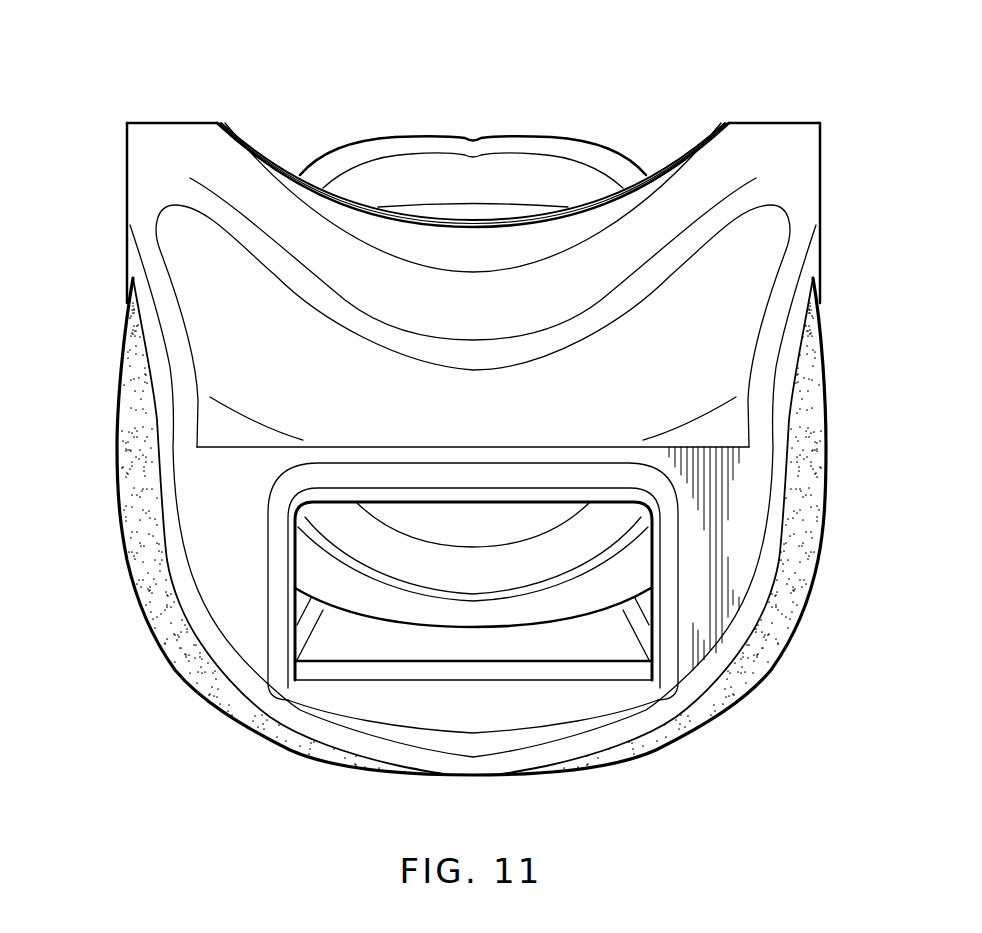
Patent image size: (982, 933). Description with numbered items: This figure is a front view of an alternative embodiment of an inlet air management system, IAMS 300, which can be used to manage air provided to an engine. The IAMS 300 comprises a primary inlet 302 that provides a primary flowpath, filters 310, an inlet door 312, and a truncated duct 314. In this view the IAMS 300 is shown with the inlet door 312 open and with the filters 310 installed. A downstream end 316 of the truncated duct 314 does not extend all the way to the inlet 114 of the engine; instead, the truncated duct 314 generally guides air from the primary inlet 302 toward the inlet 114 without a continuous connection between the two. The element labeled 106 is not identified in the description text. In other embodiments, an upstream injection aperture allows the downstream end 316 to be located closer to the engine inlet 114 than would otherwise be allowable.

The housing assembly 106 is at (214, 64).
The inlet 114 is at (478, 518).
The IAMS 300 is at (92, 548).
The primary inlet 302 is at (302, 588).
The filters 310 is at (118, 462).
The inlet door 312 is at (427, 670).
The truncated duct 314 is at (607, 643).
The downstream end 316 is at (490, 625).